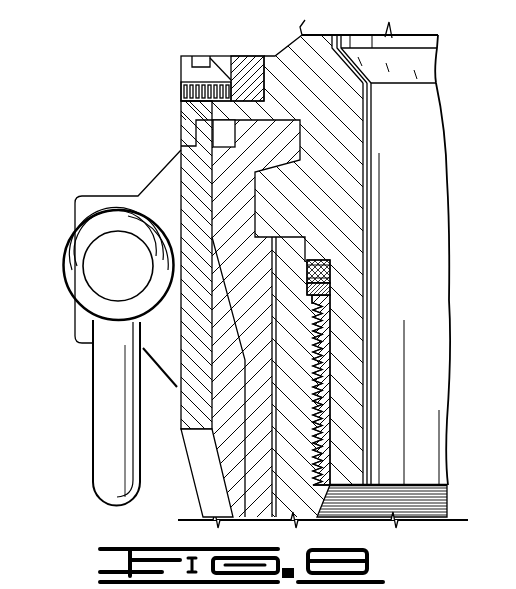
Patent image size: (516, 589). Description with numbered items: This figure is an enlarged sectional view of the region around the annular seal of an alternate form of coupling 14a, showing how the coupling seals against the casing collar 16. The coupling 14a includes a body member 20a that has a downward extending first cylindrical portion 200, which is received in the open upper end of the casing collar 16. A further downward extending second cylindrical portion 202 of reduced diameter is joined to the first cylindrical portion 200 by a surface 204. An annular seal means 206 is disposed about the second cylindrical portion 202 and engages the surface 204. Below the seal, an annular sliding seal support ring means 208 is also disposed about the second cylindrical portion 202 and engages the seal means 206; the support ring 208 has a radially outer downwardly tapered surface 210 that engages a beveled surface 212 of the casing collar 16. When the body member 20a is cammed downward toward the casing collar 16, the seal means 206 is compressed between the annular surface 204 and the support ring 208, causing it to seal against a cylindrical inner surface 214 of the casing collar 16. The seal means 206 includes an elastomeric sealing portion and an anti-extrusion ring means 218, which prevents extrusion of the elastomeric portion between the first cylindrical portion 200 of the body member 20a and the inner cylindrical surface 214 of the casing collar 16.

The coupling 14a is at (175, 412).
The casing collar 16 is at (298, 450).
The body member 20a is at (374, 147).
The first cylindrical portion 200 is at (300, 258).
The second cylindrical portion 202 is at (382, 348).
The surface 204 is at (315, 258).
The annular seal means 206 is at (327, 265).
The annular sliding seal support ring means 208 is at (287, 311).
The radially outer downwardly tapered surface 210 is at (316, 294).
The beveled surface 212 is at (332, 304).
The cylindrical inner surface 214 is at (328, 282).
The anti-extrusion ring means 218 is at (343, 218).